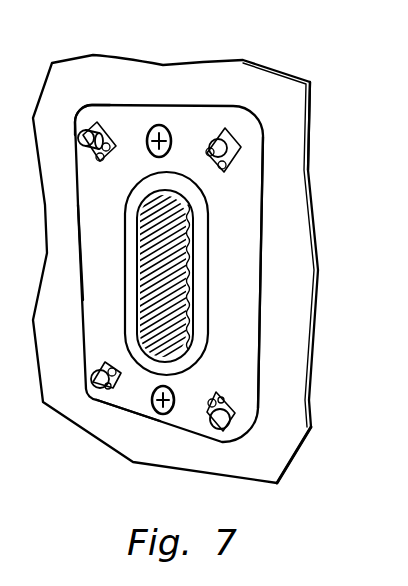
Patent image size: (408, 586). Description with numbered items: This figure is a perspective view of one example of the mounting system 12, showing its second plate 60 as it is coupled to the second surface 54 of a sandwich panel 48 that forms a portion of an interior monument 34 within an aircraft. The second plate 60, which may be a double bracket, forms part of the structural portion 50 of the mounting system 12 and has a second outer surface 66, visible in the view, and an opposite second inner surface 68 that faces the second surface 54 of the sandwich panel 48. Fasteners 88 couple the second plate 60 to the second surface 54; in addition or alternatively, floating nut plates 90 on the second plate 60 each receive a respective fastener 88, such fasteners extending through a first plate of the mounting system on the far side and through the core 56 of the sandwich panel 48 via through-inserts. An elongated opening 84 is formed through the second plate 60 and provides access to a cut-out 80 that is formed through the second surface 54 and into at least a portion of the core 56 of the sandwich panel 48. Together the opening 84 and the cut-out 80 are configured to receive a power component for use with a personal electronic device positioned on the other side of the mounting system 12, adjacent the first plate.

The mounting system 12 is at (345, 78).
The interior monument 34 is at (323, 211).
The sandwich panel 48 is at (328, 307).
The structural portion 50 is at (63, 167).
The second surface 54 is at (50, 373).
The core 56 is at (140, 238).
The second plate 60 is at (97, 102).
The second outer surface 66 is at (95, 269).
The second inner surface 68 is at (259, 385).
The cut-out 80 is at (152, 287).
The opening 84 is at (191, 331).
The fastener 88 is at (150, 127).
The floating nut plate 90 is at (242, 150).